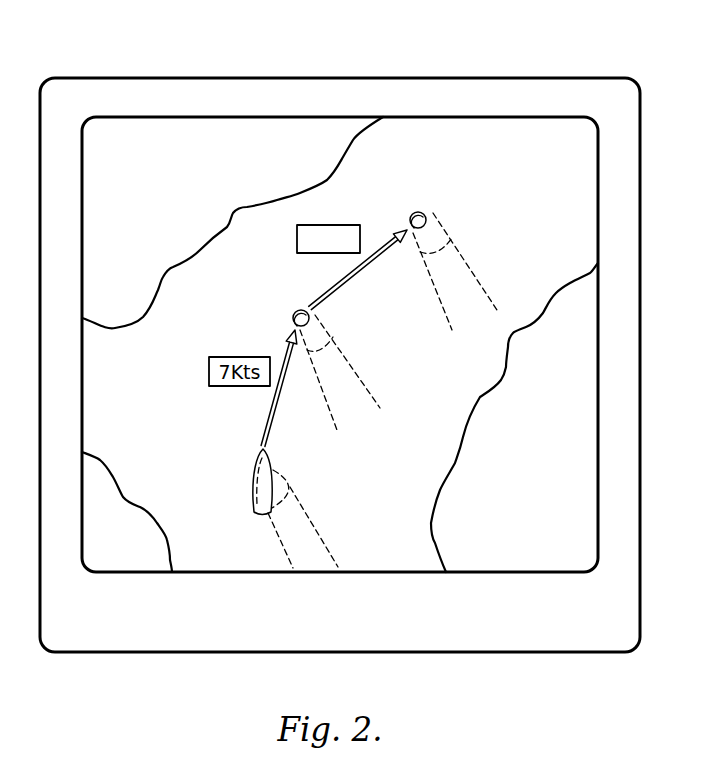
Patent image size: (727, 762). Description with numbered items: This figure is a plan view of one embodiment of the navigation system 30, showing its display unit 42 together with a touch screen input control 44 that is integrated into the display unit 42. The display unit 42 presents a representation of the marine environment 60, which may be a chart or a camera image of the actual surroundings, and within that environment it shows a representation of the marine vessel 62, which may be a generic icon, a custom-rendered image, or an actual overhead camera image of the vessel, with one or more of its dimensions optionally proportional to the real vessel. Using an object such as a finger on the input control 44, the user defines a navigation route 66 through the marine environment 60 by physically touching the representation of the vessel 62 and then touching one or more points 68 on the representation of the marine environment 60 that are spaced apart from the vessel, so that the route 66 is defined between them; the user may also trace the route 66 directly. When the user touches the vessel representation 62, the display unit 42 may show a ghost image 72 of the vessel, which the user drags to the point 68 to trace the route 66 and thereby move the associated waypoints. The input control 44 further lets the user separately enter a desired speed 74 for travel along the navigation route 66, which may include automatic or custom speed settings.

The navigation system 30 is at (473, 63).
The display unit 42 is at (596, 90).
The input control 44 is at (585, 170).
The representation of the marine environment 60 is at (460, 143).
The representation of the marine vessel 62 is at (262, 462).
The navigation route 66 is at (359, 284).
The point 68 is at (425, 201).
The ghost image 72 is at (293, 315).
The desired speed 74 is at (325, 216).